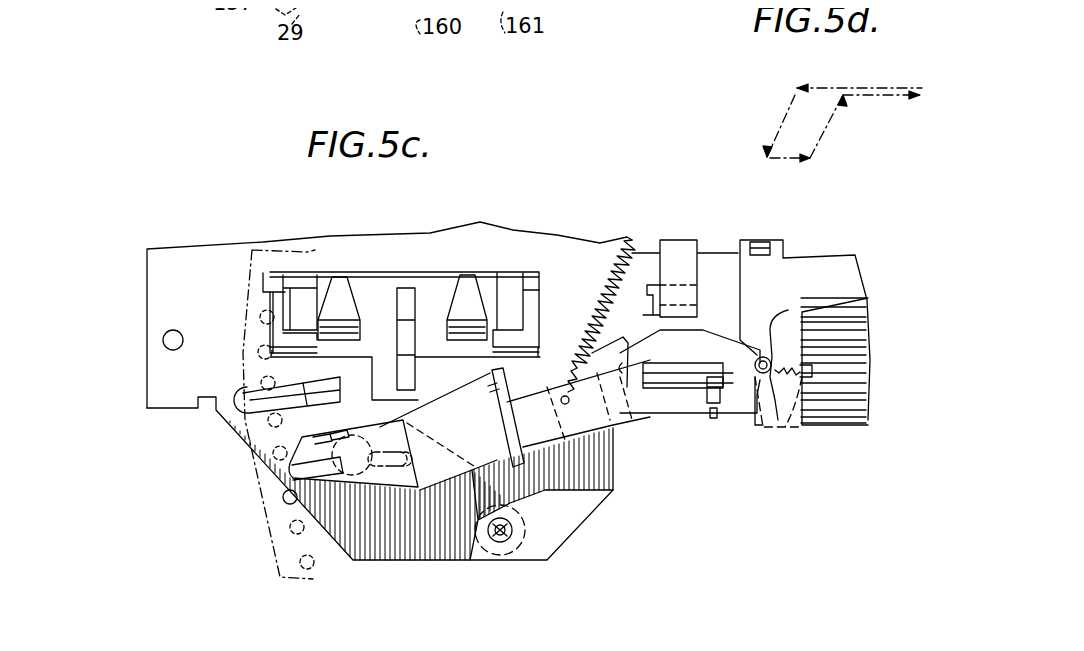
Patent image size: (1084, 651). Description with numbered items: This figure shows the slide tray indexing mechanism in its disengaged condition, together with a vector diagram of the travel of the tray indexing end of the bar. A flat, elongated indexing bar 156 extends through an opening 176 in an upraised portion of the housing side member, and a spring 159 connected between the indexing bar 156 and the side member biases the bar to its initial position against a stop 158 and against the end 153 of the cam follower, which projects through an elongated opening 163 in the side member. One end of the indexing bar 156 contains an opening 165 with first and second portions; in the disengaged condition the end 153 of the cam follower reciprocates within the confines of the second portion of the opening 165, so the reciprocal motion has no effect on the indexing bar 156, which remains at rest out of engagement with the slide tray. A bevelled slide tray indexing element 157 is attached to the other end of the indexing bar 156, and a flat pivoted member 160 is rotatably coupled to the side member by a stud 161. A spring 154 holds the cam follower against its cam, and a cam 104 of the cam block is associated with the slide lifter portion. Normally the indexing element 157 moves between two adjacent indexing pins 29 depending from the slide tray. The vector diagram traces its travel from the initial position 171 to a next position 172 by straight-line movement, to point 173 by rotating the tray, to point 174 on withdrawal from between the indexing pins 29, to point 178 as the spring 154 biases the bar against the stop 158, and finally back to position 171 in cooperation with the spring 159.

In FIG. 5C, the indexing pins 29 is at (263, 377).
In FIG. 5C, the cam 104 is at (833, 393).
In FIG. 5C, the end of cam follower 153 is at (717, 387).
In FIG. 5C, the spring 154 is at (778, 405).
In FIG. 5C, the indexing bar 156 is at (675, 317).
In FIG. 5C, the slide tray indexing element 157 is at (283, 498).
In FIG. 5C, the stop 158 is at (325, 428).
In FIG. 5C, the spring 159 is at (602, 292).
In FIG. 5C, the pivoted member 160 is at (455, 520).
In FIG. 5C, the stud 161 is at (507, 530).
In FIG. 5C, the elongated opening 163 is at (680, 382).
In FIG. 5C, the opening 165 is at (695, 365).
In FIG. 5D, the initial position 171 is at (940, 65).
In FIG. 5D, the next position 172 is at (797, 88).
In FIG. 5D, the point 173 is at (770, 157).
In FIG. 5D, the point 174 is at (815, 160).
In FIG. 5C, the opening 176 is at (488, 390).
In FIG. 5D, the point 178 is at (843, 97).